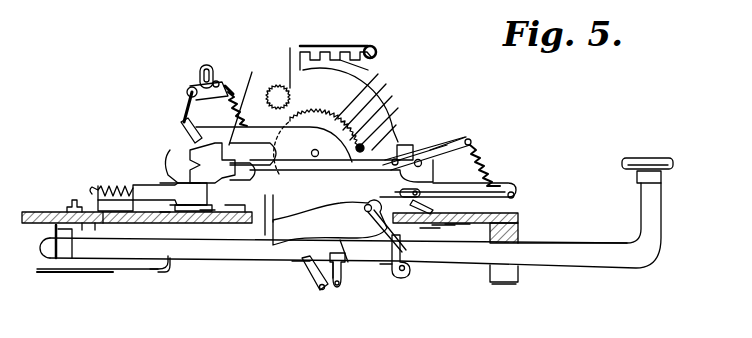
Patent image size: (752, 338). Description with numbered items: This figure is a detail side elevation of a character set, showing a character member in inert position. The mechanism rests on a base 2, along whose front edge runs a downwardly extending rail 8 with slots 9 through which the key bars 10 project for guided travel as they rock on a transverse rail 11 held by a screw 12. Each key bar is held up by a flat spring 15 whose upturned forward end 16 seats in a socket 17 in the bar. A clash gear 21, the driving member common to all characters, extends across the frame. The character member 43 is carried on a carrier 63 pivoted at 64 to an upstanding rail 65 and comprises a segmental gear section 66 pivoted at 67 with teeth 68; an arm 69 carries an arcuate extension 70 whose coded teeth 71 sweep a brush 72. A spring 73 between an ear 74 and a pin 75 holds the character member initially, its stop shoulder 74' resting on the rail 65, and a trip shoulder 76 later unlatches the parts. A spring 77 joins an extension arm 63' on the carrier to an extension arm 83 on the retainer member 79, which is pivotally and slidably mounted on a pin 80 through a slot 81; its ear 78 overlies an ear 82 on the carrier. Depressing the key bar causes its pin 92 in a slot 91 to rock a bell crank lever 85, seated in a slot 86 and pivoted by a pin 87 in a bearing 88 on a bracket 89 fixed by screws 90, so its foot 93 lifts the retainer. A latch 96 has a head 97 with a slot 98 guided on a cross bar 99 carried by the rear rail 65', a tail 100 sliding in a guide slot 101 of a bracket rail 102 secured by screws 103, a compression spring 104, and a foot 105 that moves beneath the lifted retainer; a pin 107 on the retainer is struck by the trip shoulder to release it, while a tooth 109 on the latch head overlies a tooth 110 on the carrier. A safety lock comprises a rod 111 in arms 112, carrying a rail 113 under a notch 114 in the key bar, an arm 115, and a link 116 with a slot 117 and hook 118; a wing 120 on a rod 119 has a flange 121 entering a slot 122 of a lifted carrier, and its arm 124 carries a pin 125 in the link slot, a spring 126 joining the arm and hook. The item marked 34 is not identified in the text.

The base 2 is at (505, 213).
The rail 8 is at (518, 235).
The slots 9 is at (514, 280).
The key bars 10 is at (563, 255).
The rail 11 is at (60, 272).
The screw 12 is at (70, 208).
The springs 15 is at (85, 225).
The upturned forward ends 16 is at (160, 242).
The sockets 17 is at (157, 282).
The clash gear 21 is at (306, 44).
The slide 34 is at (258, 235).
The character member 43 is at (380, 53).
The carrier 63 is at (480, 139).
The extension arm 63' is at (447, 142).
The pivot 64 is at (473, 158).
The upstanding rail 65 is at (459, 177).
The rear rail 65' is at (260, 115).
The segmental gear section 66 is at (392, 96).
The pivot 67 is at (378, 74).
The teeth 68 is at (386, 84).
The arm 69 is at (396, 125).
The arcuate extension 70 is at (356, 54).
The teeth 71 is at (346, 50).
The brush 72 is at (372, 47).
The spring 73 is at (398, 108).
The ear 74 is at (286, 61).
The stop shoulder 74' is at (420, 133).
The pin 75 is at (470, 141).
The trip shoulder 76 is at (268, 262).
The spring 77 is at (503, 186).
The ear 78 is at (180, 226).
The retainer member 79 is at (206, 226).
The pin 80 is at (495, 284).
The slot 81 is at (455, 232).
The ear 82 is at (192, 226).
The extension arm 83 is at (516, 195).
The bell crank lever 85 is at (388, 268).
The slot 86 is at (232, 226).
The pin 87 is at (408, 252).
The bearing 88 is at (422, 236).
The bracket 89 is at (432, 234).
The screws 90 is at (442, 233).
The slot 91 is at (405, 270).
The pin 92 is at (400, 278).
The foot 93 is at (280, 235).
The latch 96 is at (142, 186).
The head 97 is at (168, 182).
The slot 98 is at (170, 195).
The cross bar 99 is at (112, 225).
The tail 100 is at (97, 192).
The guide slot 101 is at (54, 240).
The bracket rail 102 is at (48, 270).
The screws 103 is at (97, 225).
The compression spring 104 is at (105, 225).
The foot 105 is at (163, 226).
The pin 107 is at (447, 145).
The tooth 109 is at (166, 160).
The tooth 110 is at (168, 140).
The rod 111 is at (341, 285).
The arms 112 is at (353, 238).
The rail 113 is at (346, 262).
The notch 114 is at (336, 288).
The arm 115 is at (312, 283).
The link 116 is at (300, 262).
The slot 117 is at (228, 82).
The hook 118 is at (248, 100).
The rod 119 is at (188, 88).
The wing 120 is at (190, 128).
The flange 121 is at (182, 116).
The slot 122 is at (180, 128).
The arm 124 is at (203, 68).
The pin 125 is at (216, 80).
The spring 126 is at (240, 88).